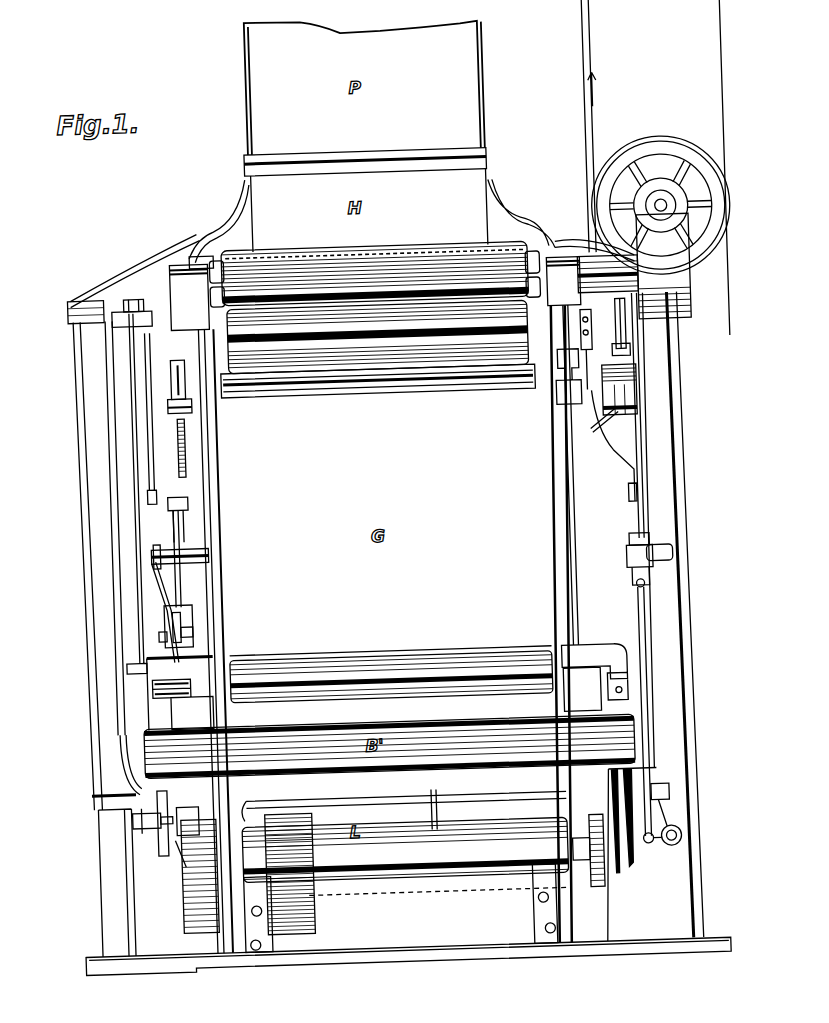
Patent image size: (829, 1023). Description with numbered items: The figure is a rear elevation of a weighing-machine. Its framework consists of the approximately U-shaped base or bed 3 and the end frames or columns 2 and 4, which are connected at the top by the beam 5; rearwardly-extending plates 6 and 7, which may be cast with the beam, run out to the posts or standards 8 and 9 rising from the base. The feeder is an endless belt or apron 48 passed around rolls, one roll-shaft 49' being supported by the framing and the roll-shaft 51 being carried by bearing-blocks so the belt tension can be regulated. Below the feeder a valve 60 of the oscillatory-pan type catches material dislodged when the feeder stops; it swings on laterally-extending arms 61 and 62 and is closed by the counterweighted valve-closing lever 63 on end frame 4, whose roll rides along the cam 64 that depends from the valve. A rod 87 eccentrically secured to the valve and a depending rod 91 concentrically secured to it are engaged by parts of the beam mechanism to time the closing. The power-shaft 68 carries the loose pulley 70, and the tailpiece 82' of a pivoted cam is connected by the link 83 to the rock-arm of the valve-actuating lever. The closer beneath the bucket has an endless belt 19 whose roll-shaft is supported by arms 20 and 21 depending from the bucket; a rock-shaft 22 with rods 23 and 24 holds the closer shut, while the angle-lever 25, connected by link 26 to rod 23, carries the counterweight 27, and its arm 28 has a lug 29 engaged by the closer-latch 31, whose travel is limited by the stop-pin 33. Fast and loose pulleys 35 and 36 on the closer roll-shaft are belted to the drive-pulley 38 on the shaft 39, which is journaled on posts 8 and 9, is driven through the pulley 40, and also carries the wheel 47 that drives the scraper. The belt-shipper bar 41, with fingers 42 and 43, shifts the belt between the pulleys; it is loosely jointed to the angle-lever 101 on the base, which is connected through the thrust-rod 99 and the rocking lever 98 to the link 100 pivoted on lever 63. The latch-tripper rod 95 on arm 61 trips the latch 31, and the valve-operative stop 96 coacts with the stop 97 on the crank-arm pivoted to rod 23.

The end frame 2 is at (84, 445).
The supporting base 3 is at (95, 880).
The end frame 4 is at (676, 476).
The beam 5 is at (181, 230).
The rearwardly-extending plate 6 is at (189, 297).
The rearwardly-extending plate 7 is at (563, 281).
The post 8 is at (222, 665).
The post 9 is at (556, 650).
The endless belt 19 is at (445, 852).
The arm 20 is at (250, 810).
The arm 21 is at (540, 832).
The rock-shaft 22 is at (380, 392).
The rod 23 is at (176, 620).
The rod 24 is at (556, 550).
The angle-lever 25 is at (181, 566).
The link 26 is at (188, 518).
The counterweight 27 is at (180, 610).
The arm 28 is at (184, 625).
The lug 29 is at (158, 629).
The closer-latch 31 is at (152, 558).
The stop-pin 33 is at (153, 547).
The fast pulley 35 is at (176, 850).
The loose pulley 36 is at (180, 830).
The drive-pulley 38 is at (190, 880).
The shaft 39 is at (398, 860).
The pulley 40 is at (290, 930).
The belt-shipper bar 41 is at (426, 799).
The finger 42 is at (140, 815).
The finger 43 is at (158, 815).
The pulley 47 is at (594, 862).
The feeder-belt 48 is at (365, 270).
The roll-shaft 49' is at (212, 242).
The roll-shaft 51 is at (236, 298).
The valve 60 is at (440, 370).
The arm 61 is at (108, 313).
The arm 62 is at (604, 300).
The valve-closing lever 63 is at (608, 430).
The cam 64 is at (590, 332).
The power-shaft 68 is at (680, 213).
The pulley 70 is at (692, 160).
The tailpiece 82' is at (660, 326).
The link 83 is at (650, 358).
The rod 87 is at (138, 470).
The valve-rod 91 is at (624, 466).
The latch-tripper 95 is at (155, 490).
The valve-operative stop 96 is at (180, 372).
The stop 97 is at (190, 440).
The rocking lever 98 is at (652, 560).
The thrust-rod 99 is at (644, 662).
The link 100 is at (646, 468).
The angle-lever 101 is at (672, 838).